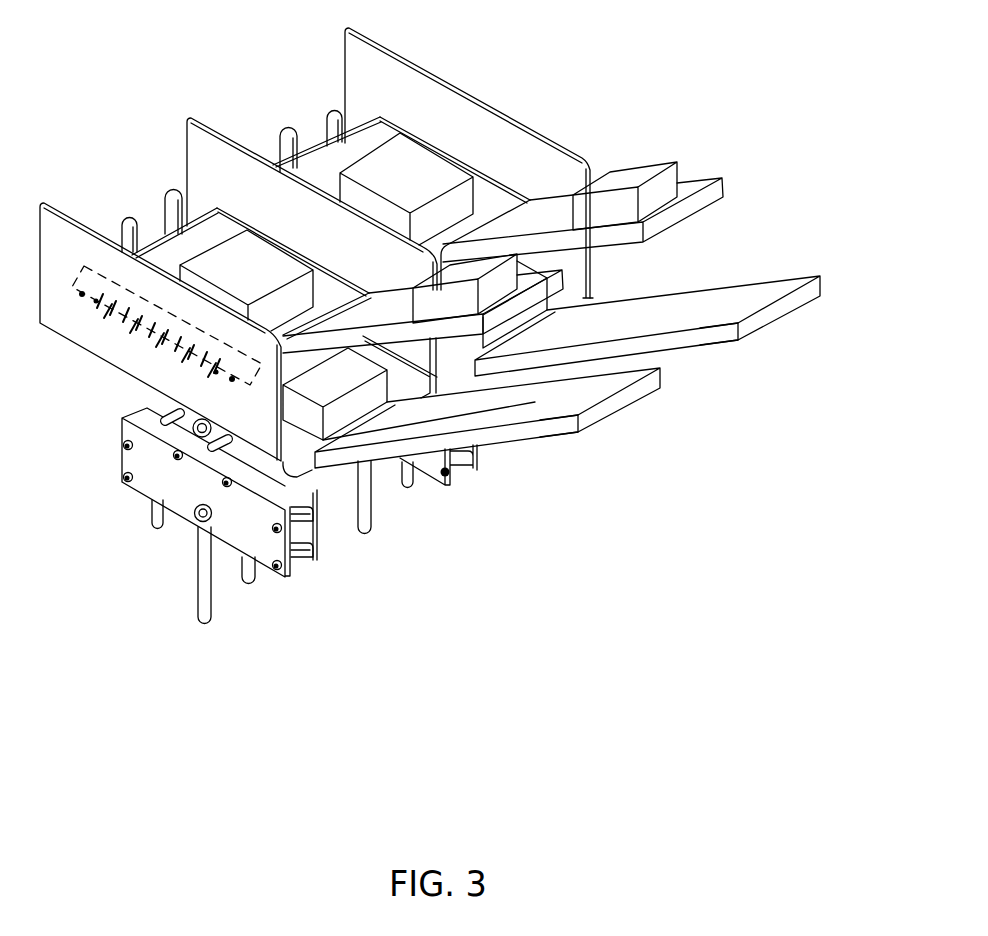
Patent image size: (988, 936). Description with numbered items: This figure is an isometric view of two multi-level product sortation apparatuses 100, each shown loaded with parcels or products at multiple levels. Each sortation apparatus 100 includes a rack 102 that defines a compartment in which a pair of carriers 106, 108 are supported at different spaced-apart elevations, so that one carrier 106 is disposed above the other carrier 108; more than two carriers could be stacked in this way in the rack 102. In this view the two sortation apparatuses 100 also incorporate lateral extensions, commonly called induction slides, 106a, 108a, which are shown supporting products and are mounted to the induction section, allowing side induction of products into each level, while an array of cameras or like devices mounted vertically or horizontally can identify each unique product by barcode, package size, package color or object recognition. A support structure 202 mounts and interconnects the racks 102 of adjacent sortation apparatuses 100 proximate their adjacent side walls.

The multi-level product sortation apparatus 100 is at (143, 186).
The rack 102 is at (94, 359).
The carrier 106 is at (215, 226).
The lateral extension 106a is at (725, 188).
The carrier 108 is at (498, 382).
The lateral extension 108a is at (780, 311).
The support structure 202 is at (179, 520).